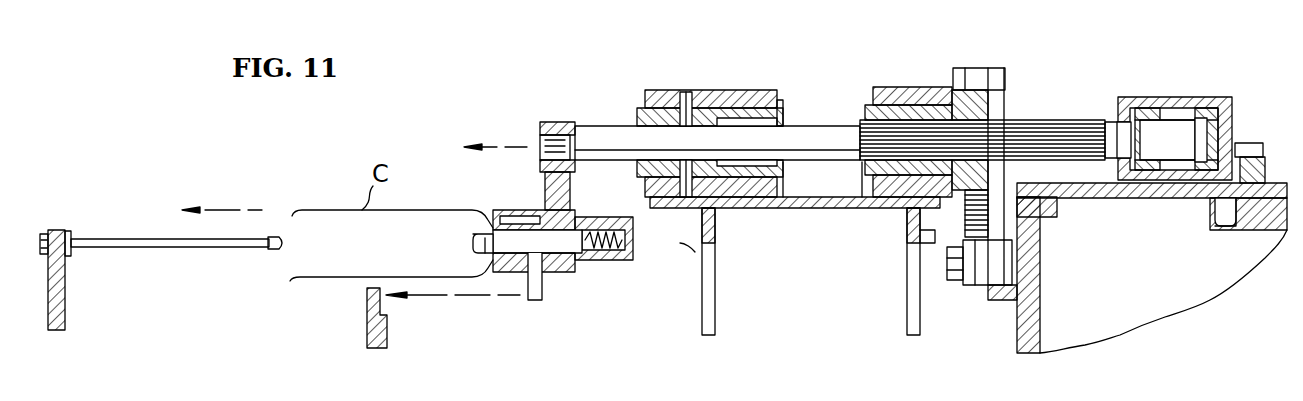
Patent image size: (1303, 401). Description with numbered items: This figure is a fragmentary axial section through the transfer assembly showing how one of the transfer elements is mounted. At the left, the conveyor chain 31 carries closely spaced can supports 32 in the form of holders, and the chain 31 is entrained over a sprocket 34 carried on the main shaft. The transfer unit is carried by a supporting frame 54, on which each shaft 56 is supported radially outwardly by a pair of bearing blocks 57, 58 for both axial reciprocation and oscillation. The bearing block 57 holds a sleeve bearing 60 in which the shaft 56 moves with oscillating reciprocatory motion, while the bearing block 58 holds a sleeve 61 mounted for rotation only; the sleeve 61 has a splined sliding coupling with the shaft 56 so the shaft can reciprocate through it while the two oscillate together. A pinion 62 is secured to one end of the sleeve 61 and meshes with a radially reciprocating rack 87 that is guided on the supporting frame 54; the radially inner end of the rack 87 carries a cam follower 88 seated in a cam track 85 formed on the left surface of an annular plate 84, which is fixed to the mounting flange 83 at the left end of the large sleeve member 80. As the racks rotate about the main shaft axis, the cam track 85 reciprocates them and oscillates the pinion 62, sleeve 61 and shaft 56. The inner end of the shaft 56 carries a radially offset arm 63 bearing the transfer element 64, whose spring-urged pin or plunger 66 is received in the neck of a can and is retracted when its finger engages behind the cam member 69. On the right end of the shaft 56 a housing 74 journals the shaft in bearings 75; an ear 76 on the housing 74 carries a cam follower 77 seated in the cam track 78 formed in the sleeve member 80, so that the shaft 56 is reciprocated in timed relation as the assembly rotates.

The chain 31 is at (68, 232).
The can supports 32 is at (170, 247).
The sprocket 34 is at (65, 290).
The cam member 69 is at (367, 312).
The pin or plunger 66 is at (513, 272).
The radially offset arm 63 is at (570, 192).
The transfer element 64 is at (583, 272).
The bearing block 57 is at (735, 84).
The sleeve bearing 60 is at (785, 106).
The shaft 56 is at (812, 126).
The bearing block 58 is at (913, 90).
The pinion 62 is at (990, 100).
The sleeve 61 is at (862, 170).
The supporting frame 54 is at (740, 226).
The rack 87 is at (935, 246).
The bearings 75 is at (1196, 106).
The housing 74 is at (1220, 98).
The ear 76 is at (1268, 160).
The sleeve member 80 is at (1102, 186).
The cam follower 77 is at (1232, 205).
The cam track 78 is at (1236, 228).
The mounting flange 83 is at (1045, 232).
The cam follower 88 is at (1012, 262).
The cam track 85 is at (1000, 300).
The plate 84 is at (1040, 318).